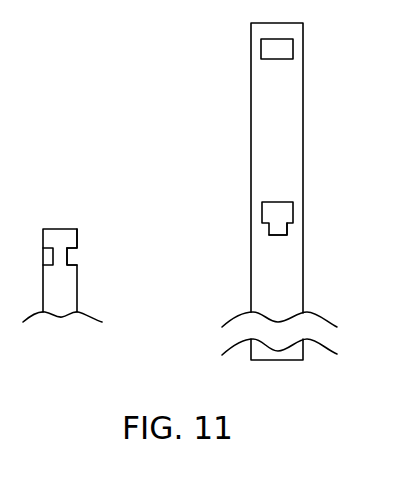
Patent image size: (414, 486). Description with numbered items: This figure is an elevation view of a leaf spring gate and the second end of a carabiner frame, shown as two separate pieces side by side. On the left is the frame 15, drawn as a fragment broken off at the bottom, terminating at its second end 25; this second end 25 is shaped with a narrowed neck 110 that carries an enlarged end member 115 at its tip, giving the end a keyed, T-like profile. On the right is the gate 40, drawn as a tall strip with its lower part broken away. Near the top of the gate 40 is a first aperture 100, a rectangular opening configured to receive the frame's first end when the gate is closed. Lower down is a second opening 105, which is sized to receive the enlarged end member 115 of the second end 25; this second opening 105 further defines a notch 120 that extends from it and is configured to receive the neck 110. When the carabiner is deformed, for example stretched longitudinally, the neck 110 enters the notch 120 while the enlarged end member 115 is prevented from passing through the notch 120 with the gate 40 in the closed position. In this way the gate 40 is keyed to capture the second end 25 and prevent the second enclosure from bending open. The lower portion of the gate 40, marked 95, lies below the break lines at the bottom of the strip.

The frame 15 is at (66, 297).
The second end 25 is at (72, 215).
The gate 40 is at (290, 127).
The lower portion of post 95 is at (290, 303).
The first aperture 100 is at (289, 49).
The second opening 105 is at (290, 210).
The neck 110 is at (82, 253).
The enlarged end member 115 is at (88, 235).
The notch 120 is at (277, 237).